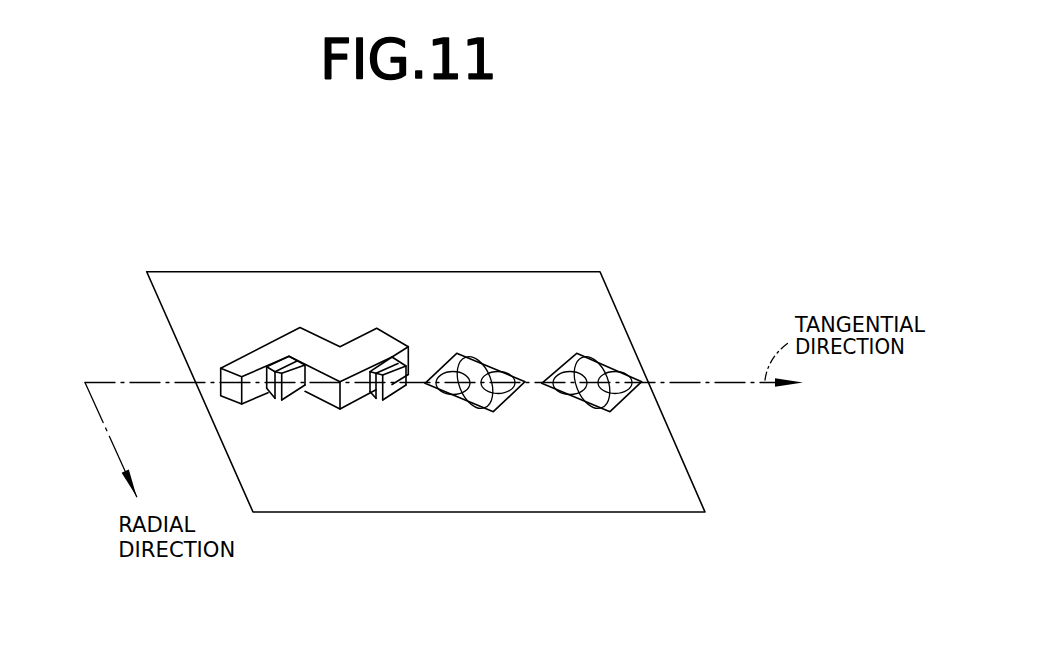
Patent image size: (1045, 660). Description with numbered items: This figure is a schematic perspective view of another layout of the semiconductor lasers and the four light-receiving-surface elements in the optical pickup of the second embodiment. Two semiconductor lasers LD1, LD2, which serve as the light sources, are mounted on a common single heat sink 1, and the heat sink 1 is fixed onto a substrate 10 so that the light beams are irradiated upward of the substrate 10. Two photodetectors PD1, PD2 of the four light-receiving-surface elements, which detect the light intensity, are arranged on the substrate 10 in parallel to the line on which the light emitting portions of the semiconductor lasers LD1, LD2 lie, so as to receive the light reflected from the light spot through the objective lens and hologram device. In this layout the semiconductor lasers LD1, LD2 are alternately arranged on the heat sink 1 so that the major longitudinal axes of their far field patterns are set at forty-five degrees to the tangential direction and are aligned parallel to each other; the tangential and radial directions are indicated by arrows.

The heat sink 1 is at (280, 340).
The substrate 10 is at (587, 277).
The semiconductor laser LD1 is at (393, 392).
The semiconductor laser LD2 is at (290, 395).
The photodetector PD1 is at (479, 406).
The photodetector PD2 is at (593, 405).